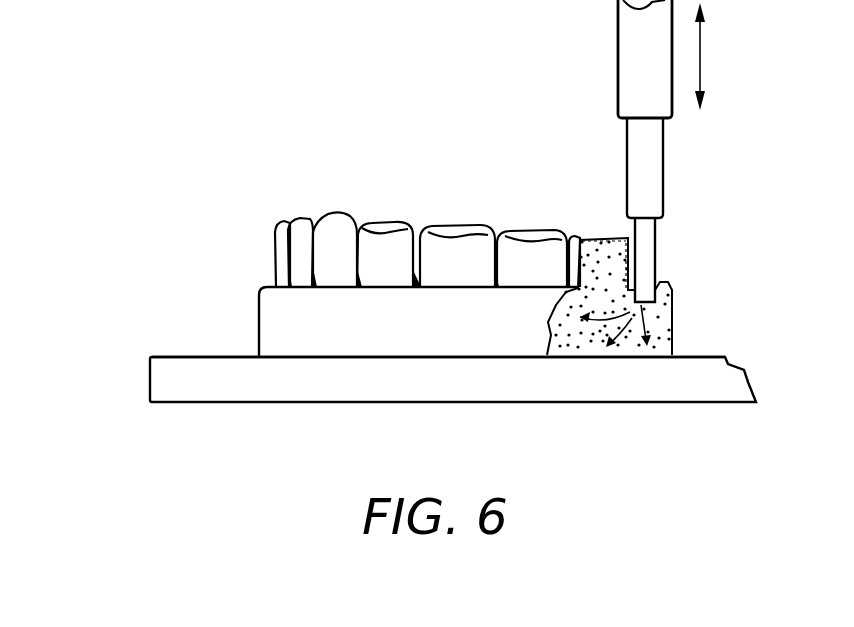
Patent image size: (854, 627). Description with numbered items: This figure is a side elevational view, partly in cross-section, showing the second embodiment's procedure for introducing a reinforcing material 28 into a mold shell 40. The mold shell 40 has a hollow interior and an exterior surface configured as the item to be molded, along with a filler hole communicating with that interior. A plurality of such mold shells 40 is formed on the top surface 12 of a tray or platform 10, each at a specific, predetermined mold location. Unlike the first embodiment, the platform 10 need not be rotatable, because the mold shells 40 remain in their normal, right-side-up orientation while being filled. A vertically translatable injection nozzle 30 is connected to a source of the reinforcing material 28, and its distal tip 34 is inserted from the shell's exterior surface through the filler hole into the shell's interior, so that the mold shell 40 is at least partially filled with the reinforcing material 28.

The platform 10 is at (150, 381).
The top surface 12 is at (163, 356).
The mold shell 40 is at (247, 292).
The reinforcing material 28 is at (572, 347).
The injection nozzle 30 is at (618, 43).
The distal tip 34 is at (656, 252).